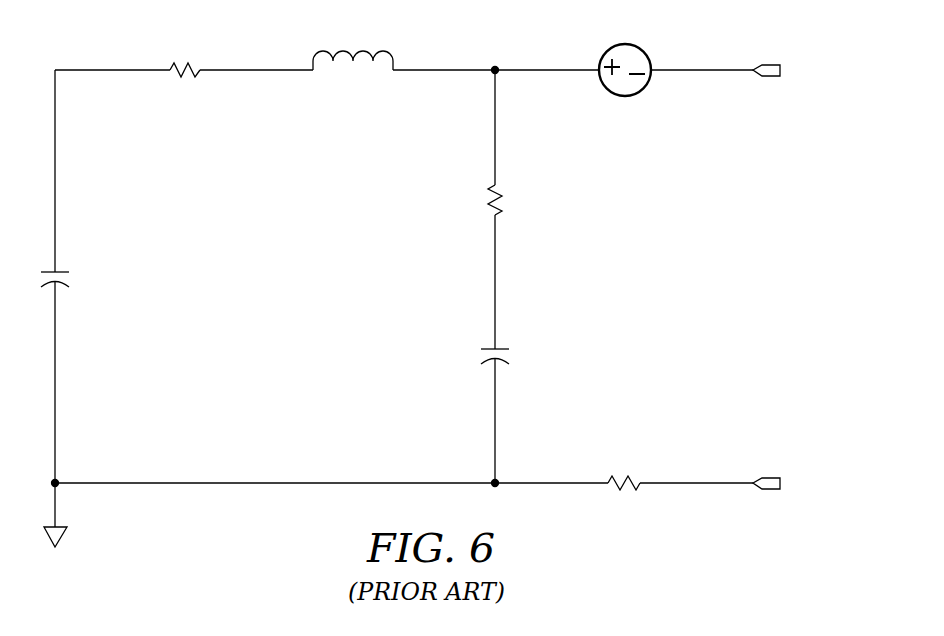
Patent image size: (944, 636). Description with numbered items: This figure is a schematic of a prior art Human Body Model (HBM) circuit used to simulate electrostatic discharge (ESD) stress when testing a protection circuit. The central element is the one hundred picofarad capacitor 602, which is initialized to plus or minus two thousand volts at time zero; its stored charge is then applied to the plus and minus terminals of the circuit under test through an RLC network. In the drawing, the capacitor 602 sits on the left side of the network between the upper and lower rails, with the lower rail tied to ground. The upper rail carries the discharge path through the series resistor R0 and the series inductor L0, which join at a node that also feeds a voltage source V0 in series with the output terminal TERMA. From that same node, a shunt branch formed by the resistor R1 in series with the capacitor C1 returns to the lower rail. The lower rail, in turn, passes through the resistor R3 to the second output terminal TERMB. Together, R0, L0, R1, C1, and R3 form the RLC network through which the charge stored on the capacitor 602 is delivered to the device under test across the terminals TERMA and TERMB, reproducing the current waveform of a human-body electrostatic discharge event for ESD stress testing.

The capacitor 602 is at (71, 278).
The resistor R0 is at (185, 57).
The inductor L0 is at (353, 46).
The voltage source V0 is at (625, 55).
The resistor R1 is at (478, 200).
The capacitor C1 is at (477, 357).
The resistor R3 is at (624, 470).
The terminal A TERMA is at (808, 72).
The terminal B TERMB is at (809, 484).